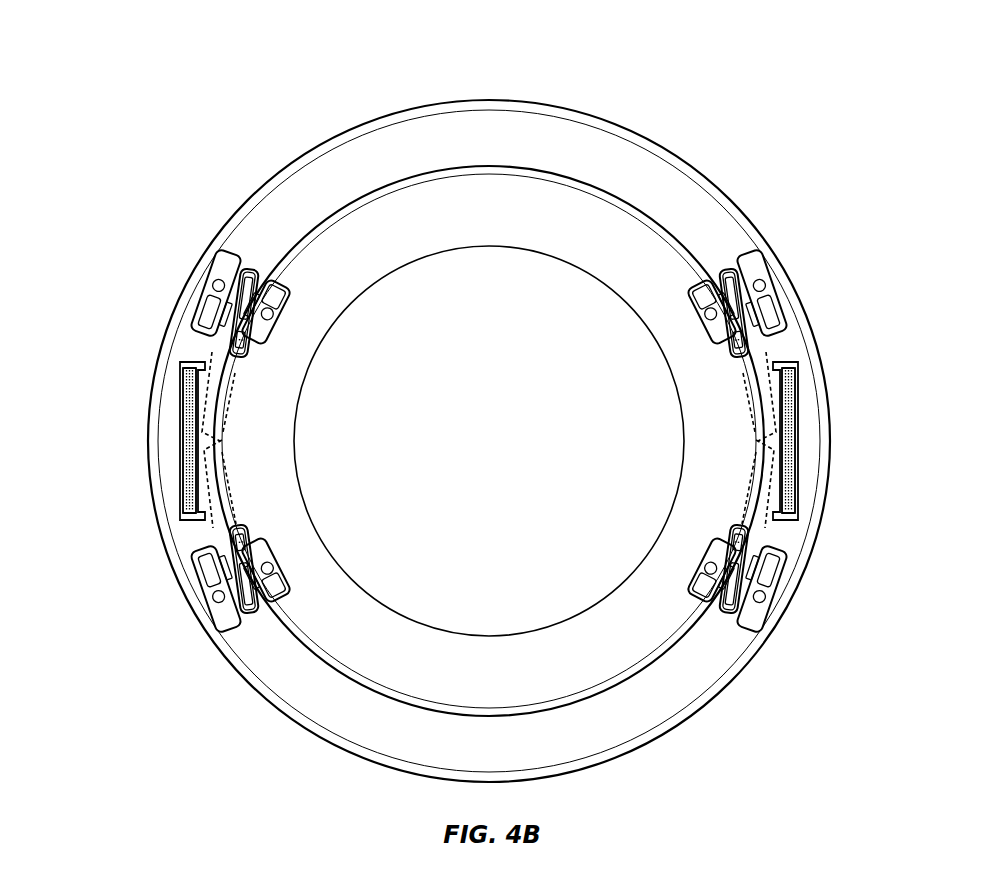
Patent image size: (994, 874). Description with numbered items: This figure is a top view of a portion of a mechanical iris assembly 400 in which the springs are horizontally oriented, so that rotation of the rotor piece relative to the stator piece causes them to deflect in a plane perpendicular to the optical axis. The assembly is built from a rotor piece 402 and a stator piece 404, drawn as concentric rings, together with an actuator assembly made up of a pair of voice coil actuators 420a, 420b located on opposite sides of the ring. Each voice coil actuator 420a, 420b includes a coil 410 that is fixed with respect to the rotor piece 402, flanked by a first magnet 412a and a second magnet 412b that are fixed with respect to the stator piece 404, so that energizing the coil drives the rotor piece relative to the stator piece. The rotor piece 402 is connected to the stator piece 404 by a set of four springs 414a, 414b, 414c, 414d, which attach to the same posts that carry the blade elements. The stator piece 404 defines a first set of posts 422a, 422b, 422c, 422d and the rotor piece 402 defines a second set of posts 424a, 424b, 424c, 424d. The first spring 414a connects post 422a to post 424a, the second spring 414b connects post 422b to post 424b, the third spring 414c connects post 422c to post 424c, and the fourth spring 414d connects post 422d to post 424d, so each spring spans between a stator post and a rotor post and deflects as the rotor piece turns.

The mechanical iris assembly 400 is at (228, 60).
The rotor piece 402 is at (420, 116).
The stator piece 404 is at (362, 122).
The coil 410 is at (195, 416).
The first magnet 412a is at (205, 380).
The second magnet 412b is at (205, 497).
The first spring 414a is at (220, 317).
The second spring 414b is at (220, 565).
The third spring 414c is at (758, 565).
The fourth spring 414d is at (758, 317).
The voice coil actuator 420a is at (88, 362).
The voice coil actuator 420b is at (890, 362).
The first post 422a is at (274, 313).
The first post 422b is at (274, 569).
The first post 422c is at (704, 569).
The first post 422d is at (704, 313).
The second post 424a is at (211, 285).
The second post 424b is at (211, 597).
The second post 424c is at (767, 597).
The second post 424d is at (767, 285).